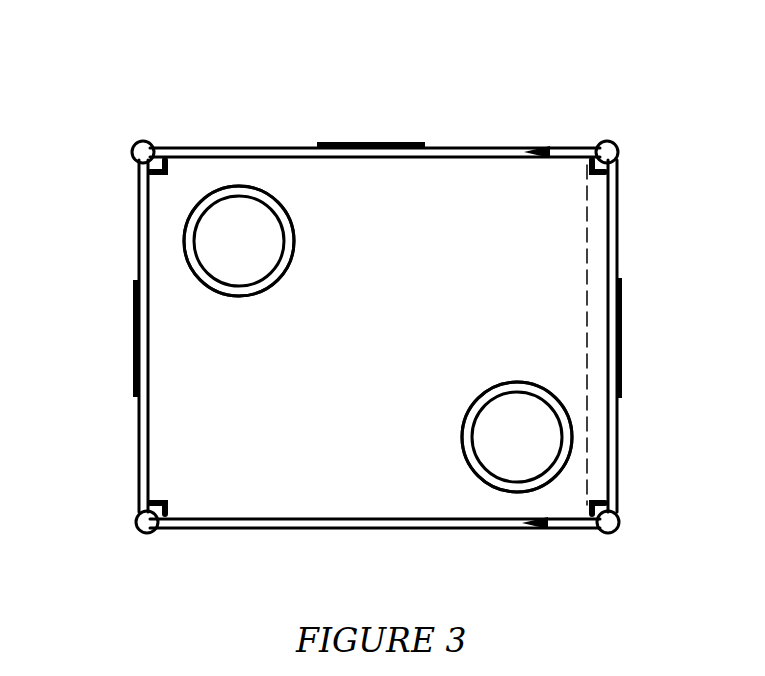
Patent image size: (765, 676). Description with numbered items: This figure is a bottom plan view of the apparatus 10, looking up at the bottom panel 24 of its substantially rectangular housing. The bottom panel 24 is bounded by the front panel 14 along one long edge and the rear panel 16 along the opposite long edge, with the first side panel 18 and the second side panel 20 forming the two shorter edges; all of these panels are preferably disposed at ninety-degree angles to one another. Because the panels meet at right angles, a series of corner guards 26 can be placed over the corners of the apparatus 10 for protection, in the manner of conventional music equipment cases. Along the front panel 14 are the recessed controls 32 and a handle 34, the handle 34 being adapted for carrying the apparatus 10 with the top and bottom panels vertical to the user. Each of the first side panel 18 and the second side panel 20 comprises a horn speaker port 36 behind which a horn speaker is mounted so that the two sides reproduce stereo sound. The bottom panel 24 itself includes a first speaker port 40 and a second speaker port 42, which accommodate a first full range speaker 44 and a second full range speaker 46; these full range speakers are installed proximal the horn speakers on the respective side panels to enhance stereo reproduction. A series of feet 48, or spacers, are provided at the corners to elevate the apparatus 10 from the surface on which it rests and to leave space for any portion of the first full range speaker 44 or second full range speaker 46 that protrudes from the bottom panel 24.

The apparatus 10 is at (124, 54).
The front panel 14 is at (240, 145).
The rear panel 16 is at (247, 532).
The first side panel 18 is at (138, 420).
The second side panel 20 is at (617, 237).
The bottom panel 24 is at (385, 346).
The corner guards 26 is at (134, 148).
The controls 32 is at (447, 146).
The handle 34 is at (367, 146).
The horn speaker port 36 is at (133, 355).
The first speaker port 40 is at (186, 236).
The second speaker port 42 is at (571, 437).
The first full range speaker 44 is at (239, 241).
The second full range speaker 46 is at (517, 437).
The feet 48 is at (150, 200).